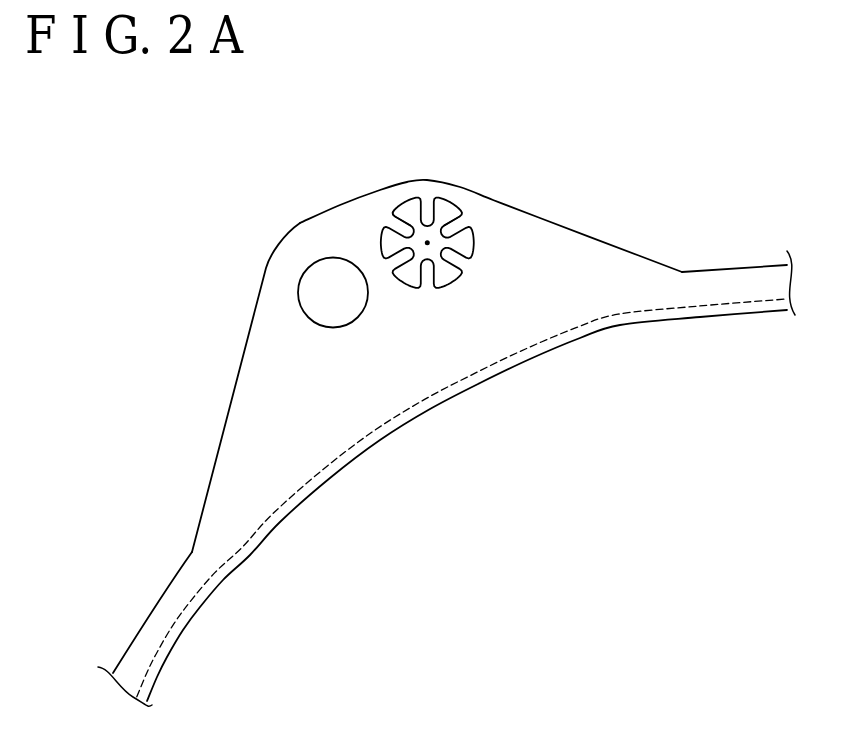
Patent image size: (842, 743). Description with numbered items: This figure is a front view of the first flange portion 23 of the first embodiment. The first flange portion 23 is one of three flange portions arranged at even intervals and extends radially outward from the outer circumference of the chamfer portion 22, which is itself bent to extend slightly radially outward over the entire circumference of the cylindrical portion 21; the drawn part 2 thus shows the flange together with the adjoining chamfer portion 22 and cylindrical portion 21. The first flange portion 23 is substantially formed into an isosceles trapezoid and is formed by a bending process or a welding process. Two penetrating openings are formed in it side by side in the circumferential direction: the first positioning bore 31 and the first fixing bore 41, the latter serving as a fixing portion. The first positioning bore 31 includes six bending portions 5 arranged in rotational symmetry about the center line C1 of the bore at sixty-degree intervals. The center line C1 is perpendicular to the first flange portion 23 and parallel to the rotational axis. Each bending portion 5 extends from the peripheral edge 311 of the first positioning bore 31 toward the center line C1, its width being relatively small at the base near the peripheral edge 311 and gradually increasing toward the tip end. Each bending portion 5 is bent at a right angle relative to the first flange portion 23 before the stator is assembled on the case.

The bracket / suspension arm 2 is at (446, 424).
The cylindrical portion 21 is at (757, 310).
The chamfer portion 22 is at (730, 277).
The first flange portion 23 is at (267, 400).
The first positioning bore 31 is at (408, 212).
The peripheral edge 311 is at (395, 210).
The bending portion 5 is at (441, 233).
The center line C1 is at (427, 240).
The first fixing bore 41 is at (327, 293).